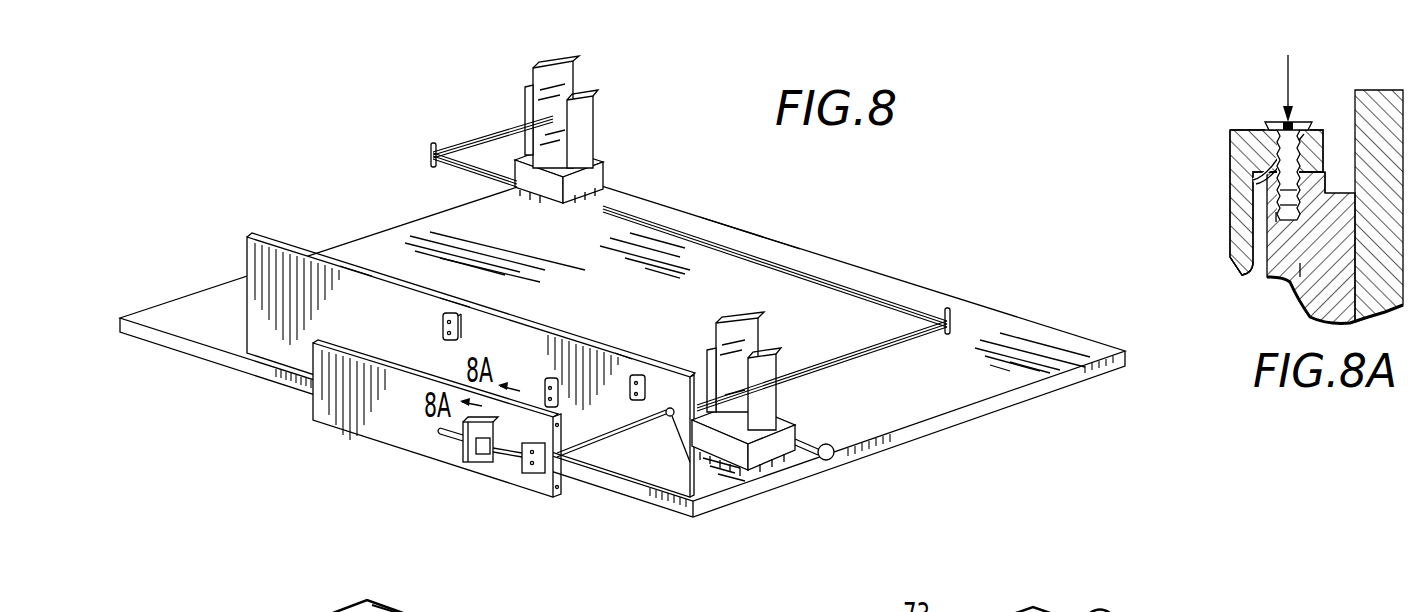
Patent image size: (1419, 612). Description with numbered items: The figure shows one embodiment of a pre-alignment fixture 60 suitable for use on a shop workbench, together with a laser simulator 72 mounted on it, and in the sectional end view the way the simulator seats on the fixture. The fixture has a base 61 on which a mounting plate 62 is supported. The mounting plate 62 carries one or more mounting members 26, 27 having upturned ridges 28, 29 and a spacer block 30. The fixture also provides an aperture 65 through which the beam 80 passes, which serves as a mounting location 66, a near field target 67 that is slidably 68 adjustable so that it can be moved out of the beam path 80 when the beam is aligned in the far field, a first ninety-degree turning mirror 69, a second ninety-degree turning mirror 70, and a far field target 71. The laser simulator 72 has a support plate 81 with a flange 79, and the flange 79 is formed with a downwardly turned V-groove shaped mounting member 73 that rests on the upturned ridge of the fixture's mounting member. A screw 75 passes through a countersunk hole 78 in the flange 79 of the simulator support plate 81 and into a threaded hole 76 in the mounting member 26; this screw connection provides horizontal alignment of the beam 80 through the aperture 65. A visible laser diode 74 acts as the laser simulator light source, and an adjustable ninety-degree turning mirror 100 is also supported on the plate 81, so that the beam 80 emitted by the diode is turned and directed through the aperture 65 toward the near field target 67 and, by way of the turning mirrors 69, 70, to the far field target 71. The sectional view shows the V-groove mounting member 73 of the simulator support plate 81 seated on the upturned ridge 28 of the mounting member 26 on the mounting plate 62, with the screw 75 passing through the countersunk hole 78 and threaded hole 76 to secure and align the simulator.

In FIG. 8, the mounting member 26 is at (630, 380).
In FIG. 8A, the mounting member 26 is at (1300, 283).
In FIG. 8, the mounting member 27 is at (460, 327).
In FIG. 8, the upturned ridge 28 is at (639, 376).
In FIG. 8A, the upturned ridge 28 is at (1278, 208).
In FIG. 8, the upturned ridge 29 is at (441, 323).
In FIG. 8, the spacer block 30 is at (545, 388).
In FIG. 8, the pre-alignment fixture 60 is at (780, 210).
In FIG. 8, the base 61 is at (981, 386).
In FIG. 8, the mounting plate 62 is at (260, 262).
In FIG. 8A, the mounting plate 62 is at (1397, 266).
In FIG. 8, the aperture 65 is at (700, 460).
In FIG. 8, the mounting location 66 is at (362, 248).
In FIG. 8, the near field target 67 is at (752, 334).
In FIG. 8, the slidable adjustment 68 is at (830, 444).
In FIG. 8, the first 90° turning mirror 69 is at (940, 296).
In FIG. 8, the second 90° turning mirror 70 is at (430, 153).
In FIG. 8, the far field target 71 is at (558, 62).
In FIG. 8, the laser simulator 72 is at (328, 388).
In FIG. 8, the downwardly turned V-groove shaped mounting member 73 is at (598, 448).
In FIG. 8A, the downwardly turned V-groove shaped mounting member 73 is at (1323, 194).
In FIG. 8, the visible laser diode 74 is at (445, 434).
In FIG. 8A, the screw 75 is at (1302, 123).
In FIG. 8A, the threaded hole 76 is at (1278, 214).
In FIG. 8A, the countersunk hole 78 is at (1268, 160).
In FIG. 8A, the flange 79 is at (1245, 128).
In FIG. 8, the beam 80 is at (755, 258).
In FIG. 8, the support plate 81 is at (363, 392).
In FIG. 8A, the support plate 81 is at (1243, 262).
In FIG. 8, the adjustable 90° turning mirror 100 is at (525, 470).